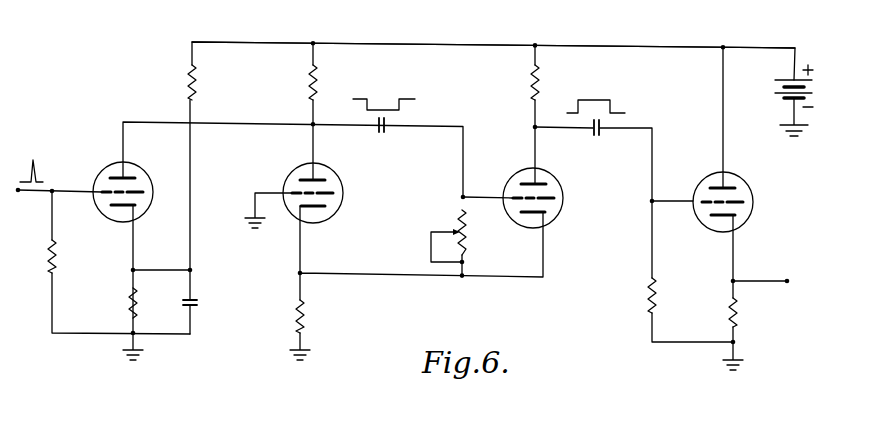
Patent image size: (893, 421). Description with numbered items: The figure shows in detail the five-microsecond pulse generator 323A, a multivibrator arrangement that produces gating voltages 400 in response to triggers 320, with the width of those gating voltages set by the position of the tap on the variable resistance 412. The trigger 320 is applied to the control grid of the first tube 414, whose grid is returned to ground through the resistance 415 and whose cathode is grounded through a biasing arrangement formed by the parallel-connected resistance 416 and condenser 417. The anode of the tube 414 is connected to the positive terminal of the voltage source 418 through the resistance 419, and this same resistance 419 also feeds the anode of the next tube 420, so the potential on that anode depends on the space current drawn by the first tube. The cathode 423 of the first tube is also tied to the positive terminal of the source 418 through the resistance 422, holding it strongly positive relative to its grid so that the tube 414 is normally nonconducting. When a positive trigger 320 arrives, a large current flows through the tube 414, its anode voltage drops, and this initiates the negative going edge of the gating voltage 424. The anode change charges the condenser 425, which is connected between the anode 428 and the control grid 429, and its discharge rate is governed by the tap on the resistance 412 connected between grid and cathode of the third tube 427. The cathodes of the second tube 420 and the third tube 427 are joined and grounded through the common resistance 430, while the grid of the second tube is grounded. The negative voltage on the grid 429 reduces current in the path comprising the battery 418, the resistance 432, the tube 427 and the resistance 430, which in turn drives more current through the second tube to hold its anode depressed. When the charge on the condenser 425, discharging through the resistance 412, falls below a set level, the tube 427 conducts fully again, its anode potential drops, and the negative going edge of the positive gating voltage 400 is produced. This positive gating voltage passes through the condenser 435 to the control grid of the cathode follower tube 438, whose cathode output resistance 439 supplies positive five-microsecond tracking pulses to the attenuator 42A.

The 5-microsecond pulse generator 323A is at (425, 33).
The trigger 320 is at (37, 166).
The first tube 414 is at (145, 176).
The cathode 423 is at (120, 206).
The resistance 415 is at (56, 262).
The resistance 416 is at (138, 298).
The condenser 417 is at (197, 302).
The resistance 422 is at (197, 82).
The resistance 419 is at (318, 82).
The gating voltage 424 is at (368, 100).
The condenser 425 is at (386, 128).
The anode 428 is at (313, 181).
The second tube 420 is at (343, 193).
The resistance 430 is at (305, 314).
The variable resistance 412 is at (467, 226).
The control grid 429 is at (520, 197).
The third tube 427 is at (563, 192).
The resistance 432 is at (540, 82).
The gating voltage 400 is at (612, 101).
The condenser 435 is at (600, 130).
The voltage source 418 is at (786, 88).
The cathode follower tube 438 is at (753, 199).
The attenuator 42A is at (781, 274).
The cathode output resistance 439 is at (738, 312).